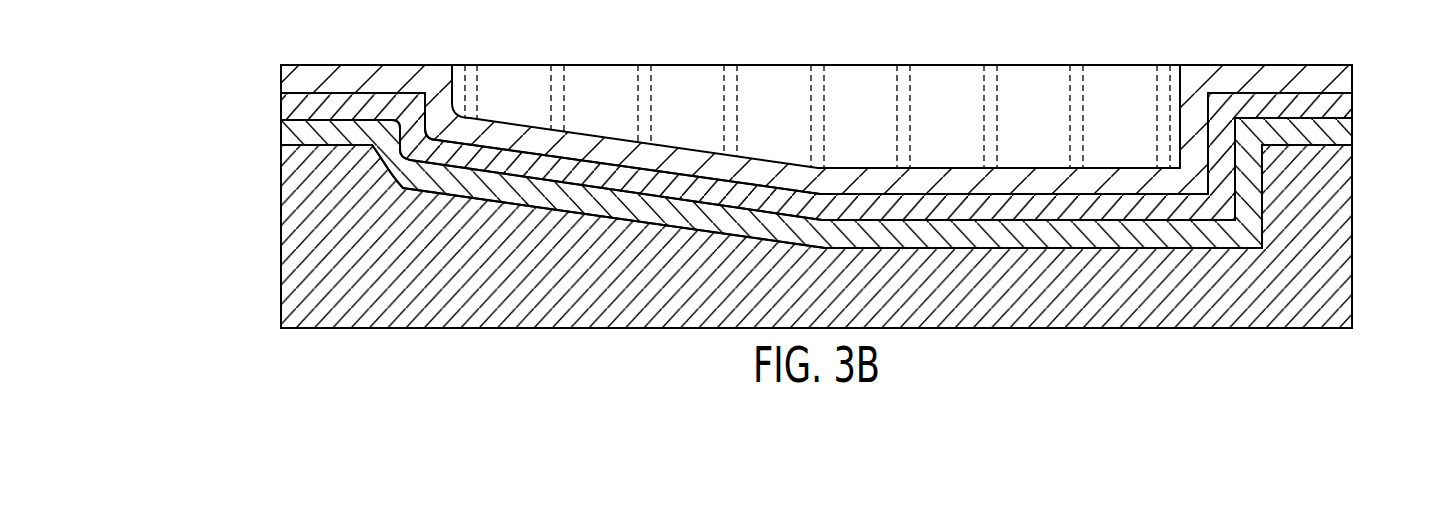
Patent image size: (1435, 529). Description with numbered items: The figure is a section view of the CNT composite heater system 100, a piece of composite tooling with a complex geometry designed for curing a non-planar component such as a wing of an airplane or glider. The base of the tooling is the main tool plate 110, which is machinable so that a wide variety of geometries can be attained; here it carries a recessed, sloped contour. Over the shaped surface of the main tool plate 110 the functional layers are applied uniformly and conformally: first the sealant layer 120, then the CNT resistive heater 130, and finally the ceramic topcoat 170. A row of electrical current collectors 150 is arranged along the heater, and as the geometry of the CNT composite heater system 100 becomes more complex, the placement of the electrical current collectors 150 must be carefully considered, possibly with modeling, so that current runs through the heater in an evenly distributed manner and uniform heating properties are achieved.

The CNT composite heater system 100 is at (212, 32).
The main tool plate 110 is at (1338, 276).
The sealant layer 120 is at (290, 135).
The CNT resistive heater 130 is at (1293, 105).
The electrical current collectors 150 is at (474, 84).
The ceramic topcoat 170 is at (340, 72).